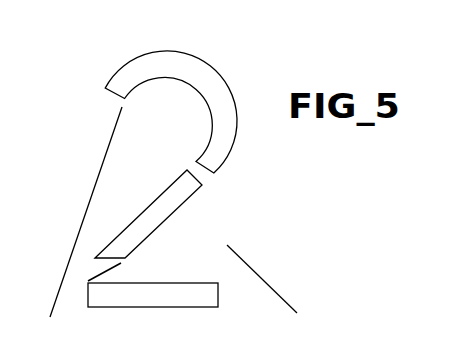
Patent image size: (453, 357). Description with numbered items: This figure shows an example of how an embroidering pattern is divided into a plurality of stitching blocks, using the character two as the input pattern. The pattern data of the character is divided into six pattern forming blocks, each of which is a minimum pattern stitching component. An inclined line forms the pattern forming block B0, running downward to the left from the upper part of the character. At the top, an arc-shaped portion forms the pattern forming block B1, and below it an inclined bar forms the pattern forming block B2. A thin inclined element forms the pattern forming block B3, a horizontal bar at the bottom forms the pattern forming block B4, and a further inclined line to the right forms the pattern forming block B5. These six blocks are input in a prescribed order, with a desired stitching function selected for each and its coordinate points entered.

The pattern forming block B0 is at (93, 185).
The pattern forming block B1 is at (195, 63).
The pattern forming block B2 is at (175, 210).
The pattern forming block B3 is at (120, 264).
The pattern forming block B4 is at (138, 307).
The pattern forming block B5 is at (262, 278).